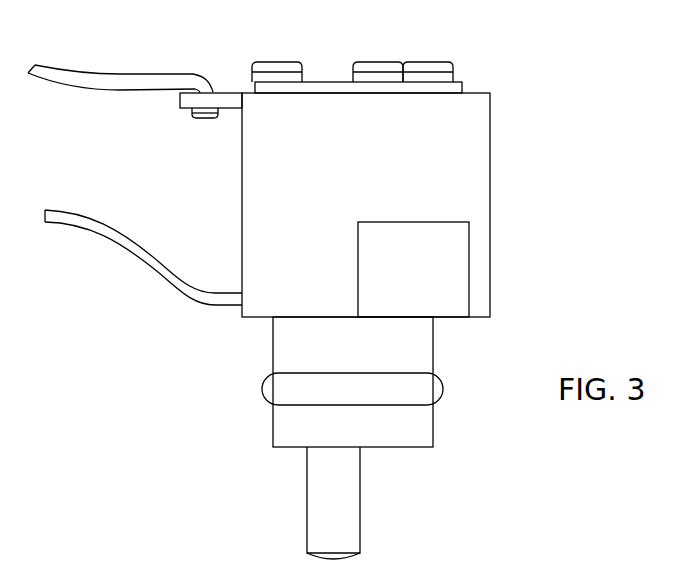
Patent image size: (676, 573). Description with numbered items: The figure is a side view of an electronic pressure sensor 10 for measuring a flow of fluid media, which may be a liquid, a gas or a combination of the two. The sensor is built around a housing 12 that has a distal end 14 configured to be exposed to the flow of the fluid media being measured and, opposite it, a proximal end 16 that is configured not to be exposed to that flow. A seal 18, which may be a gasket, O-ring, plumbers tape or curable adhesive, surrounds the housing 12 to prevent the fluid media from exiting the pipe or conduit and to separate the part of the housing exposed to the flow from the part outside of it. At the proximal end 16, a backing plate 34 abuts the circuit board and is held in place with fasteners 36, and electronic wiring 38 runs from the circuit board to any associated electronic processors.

The electronic pressure sensor 10 is at (588, 77).
The housing 12 is at (482, 202).
The distal end 14 is at (433, 445).
The proximal end 16 is at (480, 92).
The seal 18 is at (432, 390).
The backing plate 34 is at (323, 80).
The fasteners 36 is at (280, 62).
The electronic wiring 38 is at (120, 73).